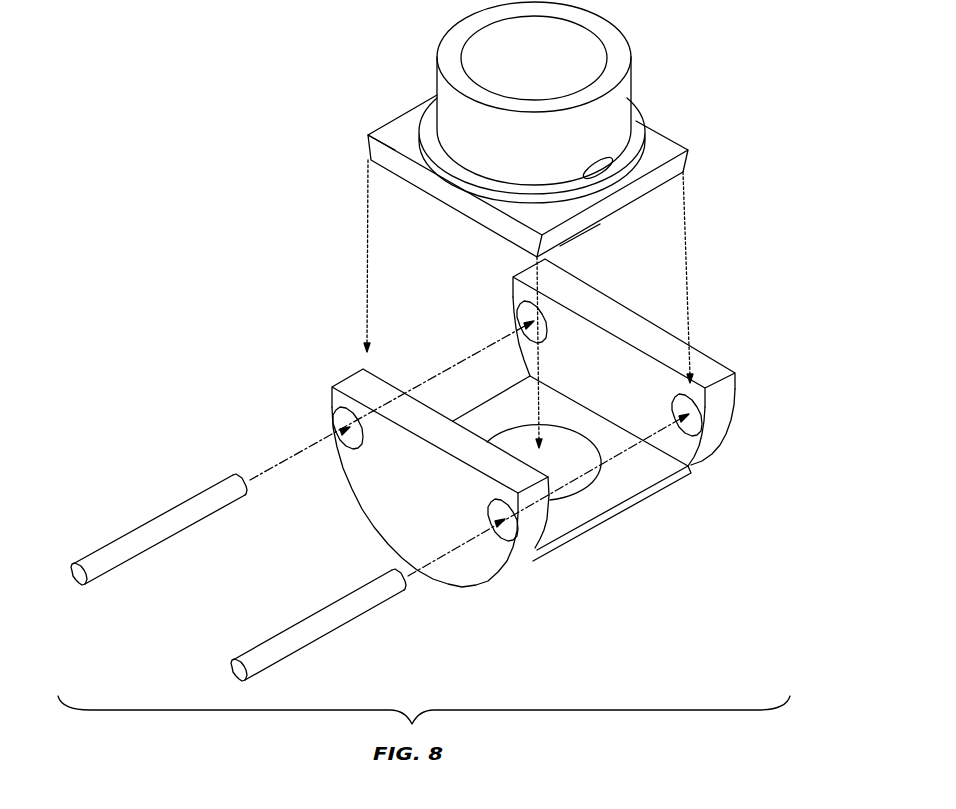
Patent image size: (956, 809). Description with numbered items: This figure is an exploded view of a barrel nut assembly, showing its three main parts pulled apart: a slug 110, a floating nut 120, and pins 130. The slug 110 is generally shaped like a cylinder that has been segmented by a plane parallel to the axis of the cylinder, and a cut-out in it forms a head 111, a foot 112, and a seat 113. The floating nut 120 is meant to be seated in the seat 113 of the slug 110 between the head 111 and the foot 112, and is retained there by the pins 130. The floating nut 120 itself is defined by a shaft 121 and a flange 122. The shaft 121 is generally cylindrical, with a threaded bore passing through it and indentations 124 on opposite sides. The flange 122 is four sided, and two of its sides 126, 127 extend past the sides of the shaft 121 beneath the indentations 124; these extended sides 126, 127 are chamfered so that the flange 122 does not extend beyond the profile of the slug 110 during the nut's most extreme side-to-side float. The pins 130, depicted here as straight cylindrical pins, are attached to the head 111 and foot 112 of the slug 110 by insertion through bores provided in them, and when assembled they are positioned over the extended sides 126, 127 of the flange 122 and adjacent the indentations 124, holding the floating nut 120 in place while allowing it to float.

The slug 110 is at (503, 423).
The head 111 is at (700, 378).
The foot 112 is at (362, 385).
The seat 113 is at (651, 491).
The floating nut 120 is at (508, 148).
The shaft 121 is at (468, 122).
The flange 122 is at (652, 152).
The indentations 124 is at (632, 153).
The extended side 126 is at (590, 222).
The extended side 127 is at (392, 130).
The pins 130 is at (161, 536).